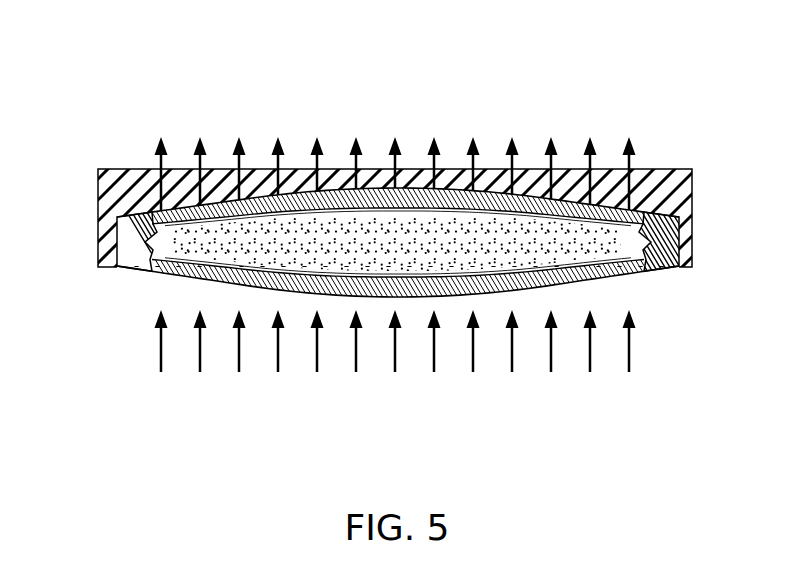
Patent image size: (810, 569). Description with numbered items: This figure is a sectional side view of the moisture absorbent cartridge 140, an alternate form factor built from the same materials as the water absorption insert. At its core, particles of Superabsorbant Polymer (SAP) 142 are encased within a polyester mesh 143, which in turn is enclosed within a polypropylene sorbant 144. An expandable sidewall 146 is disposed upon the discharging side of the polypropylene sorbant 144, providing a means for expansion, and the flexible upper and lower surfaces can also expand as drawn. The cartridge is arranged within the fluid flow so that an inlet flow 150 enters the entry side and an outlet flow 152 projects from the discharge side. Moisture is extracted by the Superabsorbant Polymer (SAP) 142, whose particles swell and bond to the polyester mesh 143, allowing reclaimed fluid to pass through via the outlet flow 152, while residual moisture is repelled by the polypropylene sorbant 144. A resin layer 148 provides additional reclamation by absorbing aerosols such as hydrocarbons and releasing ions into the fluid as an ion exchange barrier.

The moisture absorbent cartridge 140 is at (115, 73).
The Superabsorbant Polymer (SAP) 142 is at (683, 171).
The polyester mesh 143 is at (650, 262).
The polypropylene sorbant 144 is at (145, 269).
The expandable sidewall 146 is at (687, 237).
The resin layer 148 is at (655, 175).
The inlet flow 150 is at (630, 345).
The outlet flow 152 is at (160, 168).